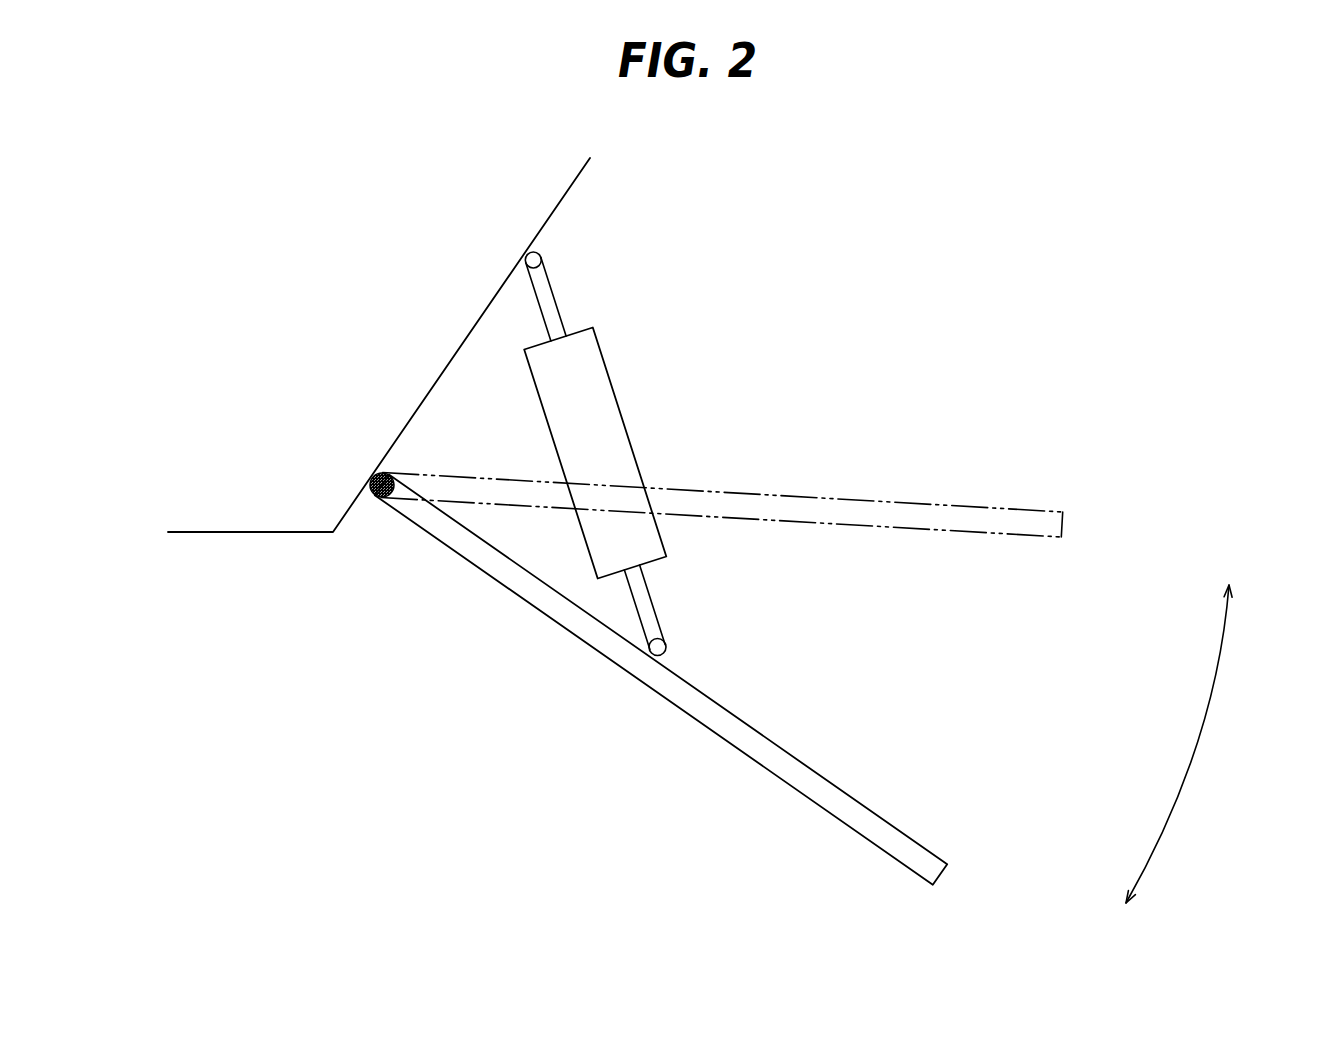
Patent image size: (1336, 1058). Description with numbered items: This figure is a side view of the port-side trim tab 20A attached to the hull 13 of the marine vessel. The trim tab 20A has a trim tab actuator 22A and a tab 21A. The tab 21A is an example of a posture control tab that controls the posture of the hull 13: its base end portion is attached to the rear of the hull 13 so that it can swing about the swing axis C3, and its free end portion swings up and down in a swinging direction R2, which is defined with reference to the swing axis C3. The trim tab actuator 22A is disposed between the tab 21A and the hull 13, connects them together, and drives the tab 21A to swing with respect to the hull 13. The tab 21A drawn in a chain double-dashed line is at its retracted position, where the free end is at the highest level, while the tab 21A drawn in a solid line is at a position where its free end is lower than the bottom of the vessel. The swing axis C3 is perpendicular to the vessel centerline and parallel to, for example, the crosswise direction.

The hull 13 is at (557, 192).
The trim tab 20A is at (916, 352).
The tab 21A is at (1005, 508).
The trim tab actuator 22A is at (628, 392).
The swing axis C3 is at (377, 497).
The swinging direction R2 is at (1182, 744).